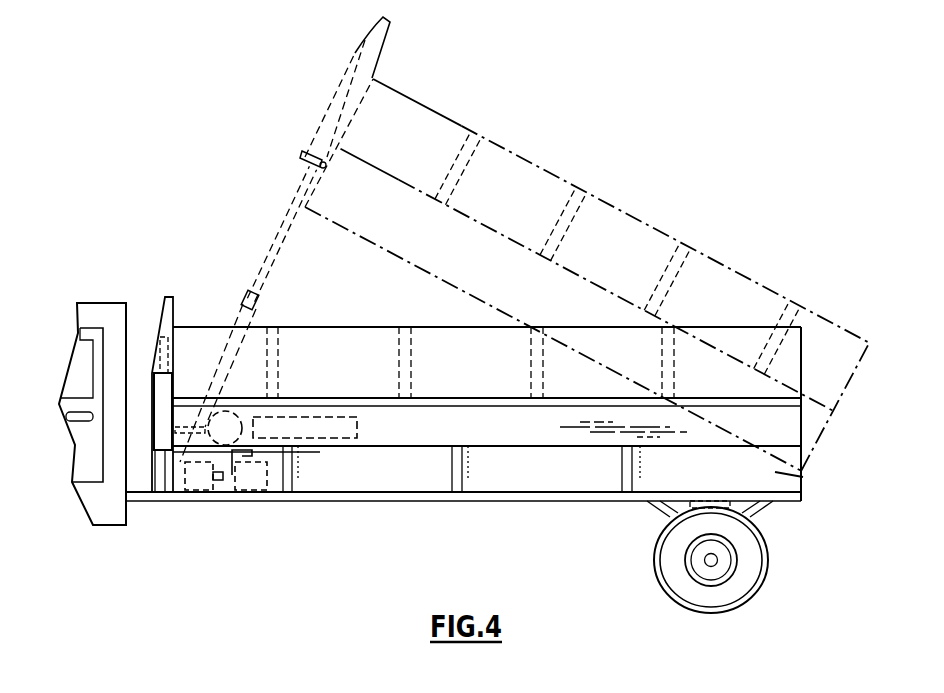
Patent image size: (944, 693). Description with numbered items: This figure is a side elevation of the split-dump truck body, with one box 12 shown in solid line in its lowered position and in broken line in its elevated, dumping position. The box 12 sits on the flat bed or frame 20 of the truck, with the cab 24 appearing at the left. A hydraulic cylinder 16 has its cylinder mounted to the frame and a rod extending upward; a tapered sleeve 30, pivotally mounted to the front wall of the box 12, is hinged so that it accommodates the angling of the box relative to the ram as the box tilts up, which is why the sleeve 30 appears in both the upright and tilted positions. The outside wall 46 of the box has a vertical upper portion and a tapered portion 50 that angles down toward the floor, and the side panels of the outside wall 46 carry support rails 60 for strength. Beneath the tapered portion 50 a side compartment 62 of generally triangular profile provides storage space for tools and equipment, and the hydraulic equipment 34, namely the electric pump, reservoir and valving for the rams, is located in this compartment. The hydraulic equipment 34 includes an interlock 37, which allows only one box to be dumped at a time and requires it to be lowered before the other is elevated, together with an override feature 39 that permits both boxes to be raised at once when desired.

The left box 12 is at (277, 327).
The hydraulic cylinder 16 is at (163, 483).
The frame 20 is at (510, 501).
The cab 24 is at (103, 518).
The tapered sleeve 30 is at (352, 52).
The hydraulic equipment 34 is at (340, 430).
The interlock 37 is at (253, 480).
The override feature 39 is at (202, 480).
The outside wall 46 is at (343, 357).
The tapered portion 50 is at (378, 218).
The support rails 60 is at (280, 370).
The side compartment 62 is at (775, 472).